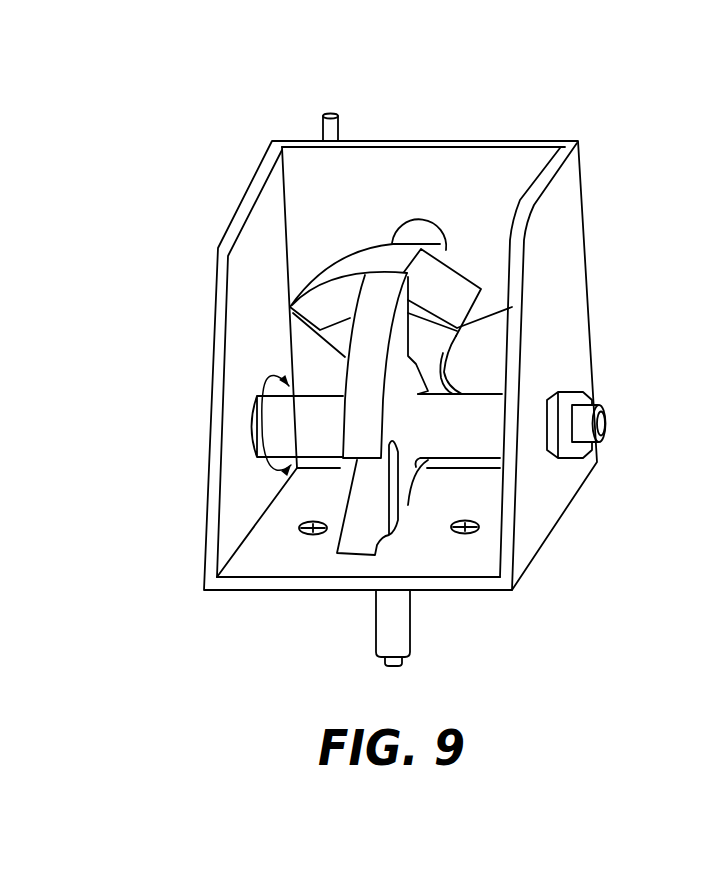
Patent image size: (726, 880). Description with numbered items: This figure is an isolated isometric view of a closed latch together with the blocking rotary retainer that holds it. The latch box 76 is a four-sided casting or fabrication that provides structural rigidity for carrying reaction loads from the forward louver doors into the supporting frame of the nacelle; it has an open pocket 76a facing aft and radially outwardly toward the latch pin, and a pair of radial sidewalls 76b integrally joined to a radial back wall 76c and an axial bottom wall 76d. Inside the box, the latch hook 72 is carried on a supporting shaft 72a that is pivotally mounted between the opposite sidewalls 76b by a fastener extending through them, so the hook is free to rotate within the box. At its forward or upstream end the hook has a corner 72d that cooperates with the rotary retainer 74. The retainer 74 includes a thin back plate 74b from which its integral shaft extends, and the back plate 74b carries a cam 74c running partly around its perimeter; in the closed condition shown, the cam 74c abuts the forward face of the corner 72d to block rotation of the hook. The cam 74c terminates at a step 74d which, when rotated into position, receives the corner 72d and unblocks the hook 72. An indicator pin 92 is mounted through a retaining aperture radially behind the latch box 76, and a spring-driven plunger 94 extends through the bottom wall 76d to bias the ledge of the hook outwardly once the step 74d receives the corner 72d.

The latch hook 72 is at (340, 500).
The supporting shaft 72a is at (480, 430).
The corner 72d is at (410, 303).
The rotary retainer 74 is at (458, 262).
The back plate 74b is at (442, 355).
The cam 74c is at (404, 257).
The step 74d is at (313, 322).
The latch box 76 is at (590, 195).
The open pocket 76a is at (248, 355).
The radial sidewalls 76b is at (280, 281).
The radial back wall 76c is at (373, 199).
The axial bottom wall 76d is at (446, 564).
The indicator pin 92 is at (341, 128).
The spring-driven plunger 94 is at (376, 602).